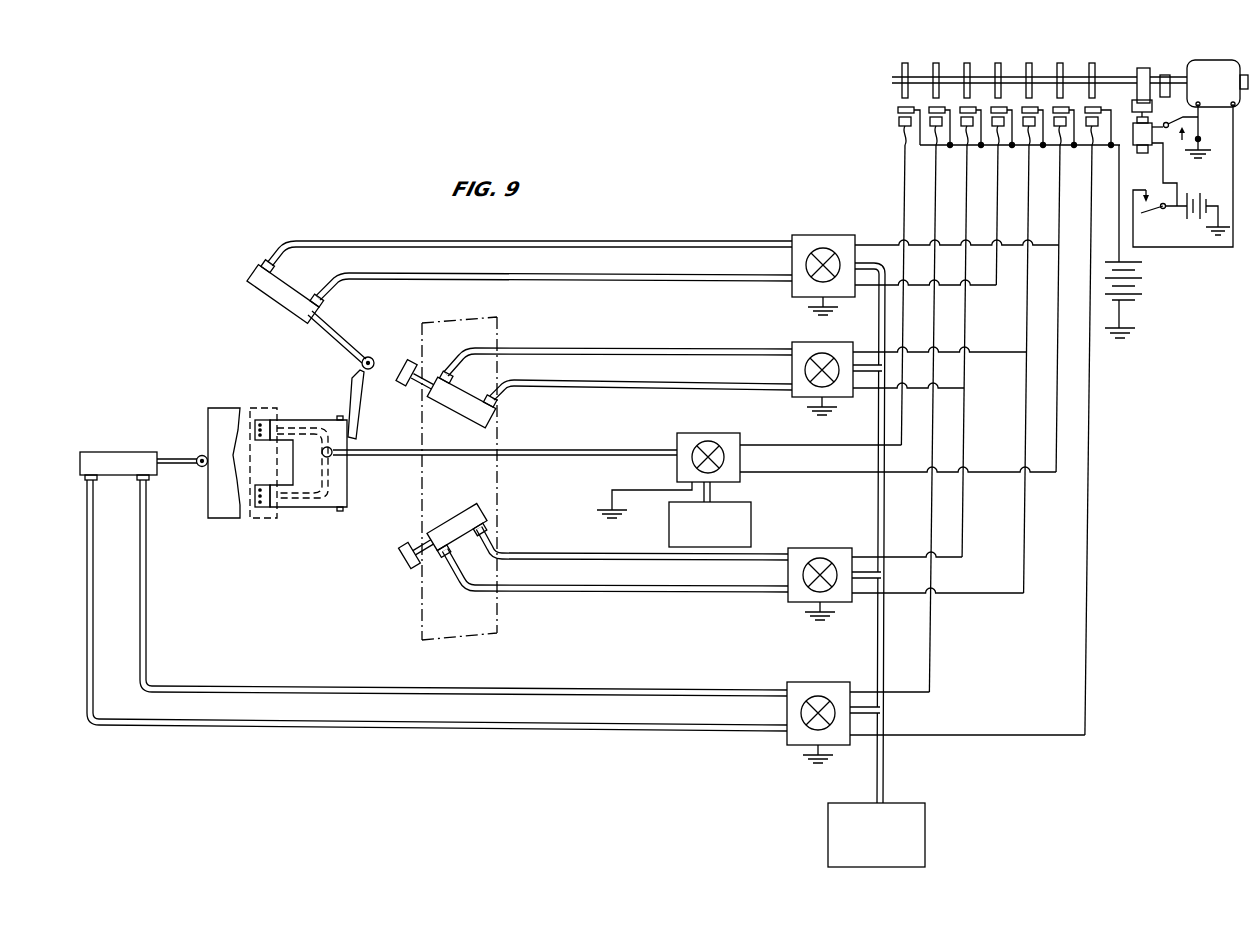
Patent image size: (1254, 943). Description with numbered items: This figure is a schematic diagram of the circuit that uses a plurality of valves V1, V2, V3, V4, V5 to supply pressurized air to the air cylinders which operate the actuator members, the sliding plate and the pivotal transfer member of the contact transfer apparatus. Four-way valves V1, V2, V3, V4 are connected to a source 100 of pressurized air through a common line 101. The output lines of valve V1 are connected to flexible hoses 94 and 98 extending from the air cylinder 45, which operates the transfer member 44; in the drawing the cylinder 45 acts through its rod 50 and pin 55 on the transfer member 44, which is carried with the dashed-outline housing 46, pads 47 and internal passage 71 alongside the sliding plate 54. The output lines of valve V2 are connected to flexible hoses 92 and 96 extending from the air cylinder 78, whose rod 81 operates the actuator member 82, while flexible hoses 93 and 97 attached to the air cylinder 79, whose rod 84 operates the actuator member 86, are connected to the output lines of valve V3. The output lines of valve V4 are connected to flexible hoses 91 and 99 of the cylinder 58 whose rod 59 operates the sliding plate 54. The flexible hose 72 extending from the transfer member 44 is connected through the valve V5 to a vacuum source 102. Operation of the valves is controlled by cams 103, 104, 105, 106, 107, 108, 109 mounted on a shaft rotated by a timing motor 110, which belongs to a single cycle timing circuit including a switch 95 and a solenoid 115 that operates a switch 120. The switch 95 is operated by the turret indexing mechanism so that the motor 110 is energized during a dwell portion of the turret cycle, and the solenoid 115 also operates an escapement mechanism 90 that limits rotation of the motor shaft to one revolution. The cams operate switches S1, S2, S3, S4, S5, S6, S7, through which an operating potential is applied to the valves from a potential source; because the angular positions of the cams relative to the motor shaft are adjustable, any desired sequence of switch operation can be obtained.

The transfer member 44 is at (307, 489).
The air cylinder 45 is at (262, 290).
The housing 46 is at (263, 419).
The pad 47 is at (259, 509).
The piston rod 50 is at (330, 332).
The sliding plate 54 is at (220, 406).
The pivot pin 55 is at (362, 373).
The cylinder 58 is at (118, 456).
The piston rod 59 is at (180, 466).
The passage 71 is at (346, 478).
The flexible hose 72 is at (532, 458).
The air cylinder 78 is at (450, 408).
The air cylinder 79 is at (452, 519).
The piston rod 81 is at (433, 371).
The actuator member 82 is at (401, 356).
The piston rod 84 is at (428, 566).
The actuator member 86 is at (392, 553).
The escapement mechanism 90 is at (1128, 74).
The flexible hose 91 is at (149, 576).
The flexible hose 92 is at (568, 386).
The flexible hose 93 is at (525, 555).
The flexible hose 94 is at (365, 277).
The switch 95 is at (1201, 115).
The flexible hose 96 is at (560, 349).
The flexible hose 97 is at (559, 592).
The flexible hose 98 is at (320, 241).
The flexible hose 99 is at (86, 543).
The source of pressurized air 100 is at (828, 828).
The common line 101 is at (889, 716).
The vacuum source 102 is at (668, 527).
The cam 103 is at (903, 63).
The cam 104 is at (934, 62).
The cam 105 is at (966, 63).
The cam 106 is at (998, 62).
The cam 107 is at (1029, 62).
The cam 108 is at (1060, 63).
The cam 109 is at (1092, 62).
The timing motor 110 is at (1222, 53).
The solenoid 115 is at (1137, 150).
The switch 120 is at (1148, 210).
The four-way valve V1 is at (826, 238).
The four-way valve V2 is at (798, 345).
The four-way valve V3 is at (820, 553).
The four-way valve V4 is at (815, 688).
The valve V5 is at (697, 422).
The switch S1 is at (897, 112).
The switch S2 is at (930, 119).
The switch S3 is at (963, 332).
The switch S4 is at (995, 196).
The switch S5 is at (1025, 350).
The switch S6 is at (1056, 289).
The switch S7 is at (1090, 421).